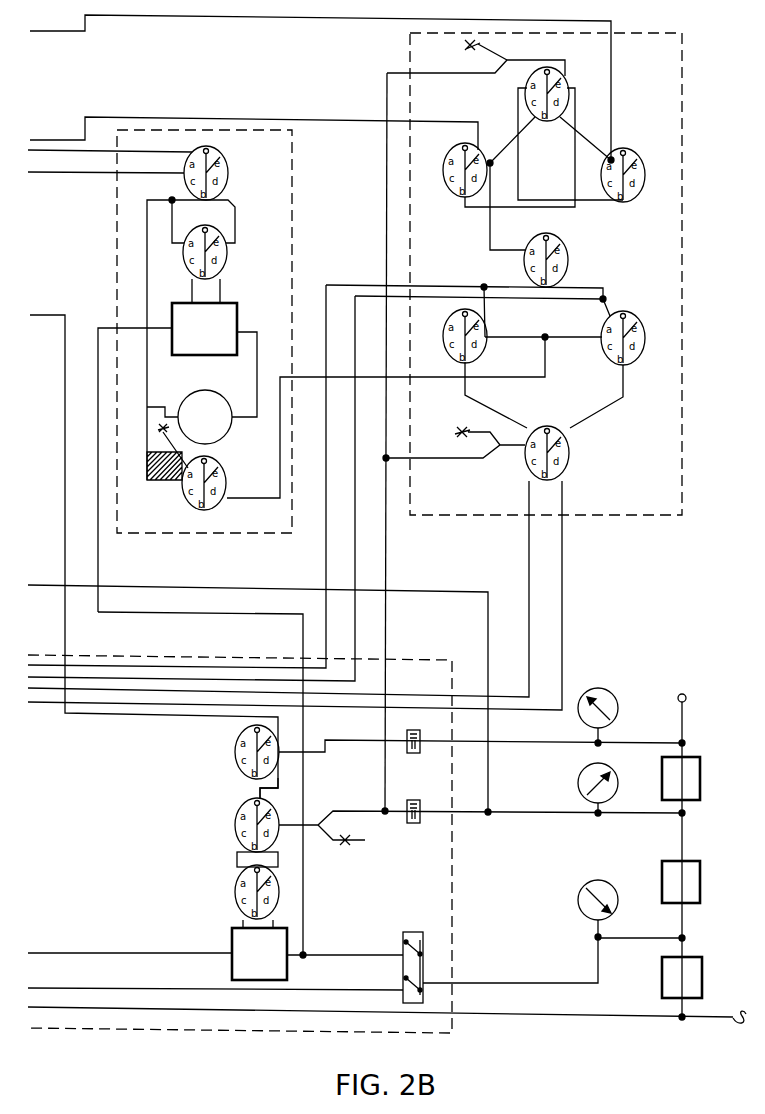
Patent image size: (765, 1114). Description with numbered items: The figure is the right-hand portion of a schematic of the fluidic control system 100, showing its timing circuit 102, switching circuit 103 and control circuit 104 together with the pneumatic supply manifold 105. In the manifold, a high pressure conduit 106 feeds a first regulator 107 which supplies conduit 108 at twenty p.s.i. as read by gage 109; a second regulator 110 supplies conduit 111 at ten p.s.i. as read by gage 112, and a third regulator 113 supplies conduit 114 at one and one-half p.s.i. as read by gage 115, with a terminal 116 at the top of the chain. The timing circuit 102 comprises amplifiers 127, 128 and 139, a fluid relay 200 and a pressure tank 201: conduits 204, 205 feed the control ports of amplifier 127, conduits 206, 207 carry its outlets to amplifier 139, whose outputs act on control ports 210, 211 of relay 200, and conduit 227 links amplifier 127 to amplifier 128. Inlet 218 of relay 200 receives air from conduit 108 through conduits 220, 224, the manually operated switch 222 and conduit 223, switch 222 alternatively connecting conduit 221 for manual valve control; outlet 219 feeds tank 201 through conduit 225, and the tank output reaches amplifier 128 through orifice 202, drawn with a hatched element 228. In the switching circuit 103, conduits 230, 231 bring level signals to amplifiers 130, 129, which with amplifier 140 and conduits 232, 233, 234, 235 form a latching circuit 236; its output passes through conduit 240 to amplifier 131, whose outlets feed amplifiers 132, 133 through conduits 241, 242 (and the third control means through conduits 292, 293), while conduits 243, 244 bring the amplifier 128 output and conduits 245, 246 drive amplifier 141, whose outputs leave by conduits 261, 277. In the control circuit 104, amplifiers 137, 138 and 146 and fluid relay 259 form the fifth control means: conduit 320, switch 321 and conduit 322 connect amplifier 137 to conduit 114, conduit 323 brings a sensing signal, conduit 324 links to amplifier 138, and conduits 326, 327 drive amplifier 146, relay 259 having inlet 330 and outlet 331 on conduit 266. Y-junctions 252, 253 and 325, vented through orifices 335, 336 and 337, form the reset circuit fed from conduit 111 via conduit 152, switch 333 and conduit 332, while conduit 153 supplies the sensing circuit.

The fluidic control system 100 is at (657, 599).
The timing circuit 102 is at (222, 536).
The switching circuit 103 is at (410, 50).
The control circuit 104 is at (50, 655).
The pneumatic supply manifold 105 is at (636, 670).
The high pressure conduit 106 is at (62, 1008).
The first regulator 107 is at (698, 957).
The conduit 108 is at (686, 937).
The gage 109 is at (583, 890).
The second regulator 110 is at (694, 862).
The conduit 111 is at (686, 813).
The gage 112 is at (578, 785).
The third regulator 113 is at (700, 762).
The conduit 114 is at (686, 743).
The gage 115 is at (617, 700).
The terminal 116 is at (686, 695).
The fluid amplifier 127 is at (228, 162).
The fluid amplifier 128 is at (226, 490).
The fluid amplifier 129 is at (445, 185).
The fluid amplifier 130 is at (645, 185).
The fluid amplifier 131 is at (567, 267).
The fluid amplifier 132 is at (446, 320).
The fluid amplifier 133 is at (644, 348).
The fluid amplifier 137 is at (237, 755).
The fluid amplifier 138 is at (237, 828).
The fluid amplifier 139 is at (225, 262).
The fluid amplifier 140 is at (525, 100).
The fluid amplifier 141 is at (569, 458).
The fluid amplifier 146 is at (280, 897).
The conduit 152 is at (518, 815).
The conduit 153 is at (56, 584).
The fluid relay 200 is at (240, 312).
The pressure tank 201 is at (229, 430).
The orifice 202 is at (164, 466).
The conduit 204 is at (38, 173).
The conduit 205 is at (136, 149).
The conduit 206 is at (172, 245).
The conduit 207 is at (236, 217).
The control port 210 is at (190, 295).
The control port 211 is at (224, 296).
The inlet 218 is at (172, 332).
The outlet 219 is at (238, 330).
The conduit 220 is at (205, 614).
The conduit 221 is at (303, 990).
The manually operated switch 222 is at (403, 1002).
The conduit 223 is at (545, 985).
The conduit 224 is at (340, 955).
The conduit 225 is at (257, 360).
The conduit 227 is at (148, 405).
The diode lead 228 is at (162, 440).
The conduit 230 is at (85, 28).
The conduit 231 is at (85, 136).
The conduit 232 is at (518, 131).
The conduit 233 is at (586, 134).
The conduit 234 is at (588, 207).
The conduit 235 is at (550, 210).
The latching circuit 236 is at (634, 93).
The conduit 240 is at (490, 242).
The conduit 241 is at (487, 316).
The conduit 242 is at (604, 300).
The conduit 243 is at (503, 337).
The conduit 244 is at (440, 377).
The conduit 245 is at (468, 400).
The conduit 246 is at (610, 405).
The first Y-junction 252 is at (500, 72).
The second Y-junction 253 is at (500, 450).
The fluid relay 259 is at (232, 945).
The conduit 261 is at (562, 545).
The conduit 266 is at (30, 954).
The conduit 277 is at (528, 550).
The conduit 292 is at (326, 588).
The conduit 293 is at (354, 565).
The conduit 320 is at (370, 739).
The manually operated switch 321 is at (410, 755).
The conduit 322 is at (505, 744).
The conduit 323 is at (32, 313).
The conduit 324 is at (260, 786).
The third Y-junction 325 is at (317, 842).
The conduit 326 is at (280, 865).
The conduit 327 is at (237, 865).
The conduit 330 is at (386, 198).
The conduit 331 is at (460, 462).
The conduit 332 is at (393, 815).
The manually operated switch 333 is at (410, 826).
The orifice 335 is at (466, 50).
The orifice 336 is at (460, 438).
The orifice 337 is at (338, 832).